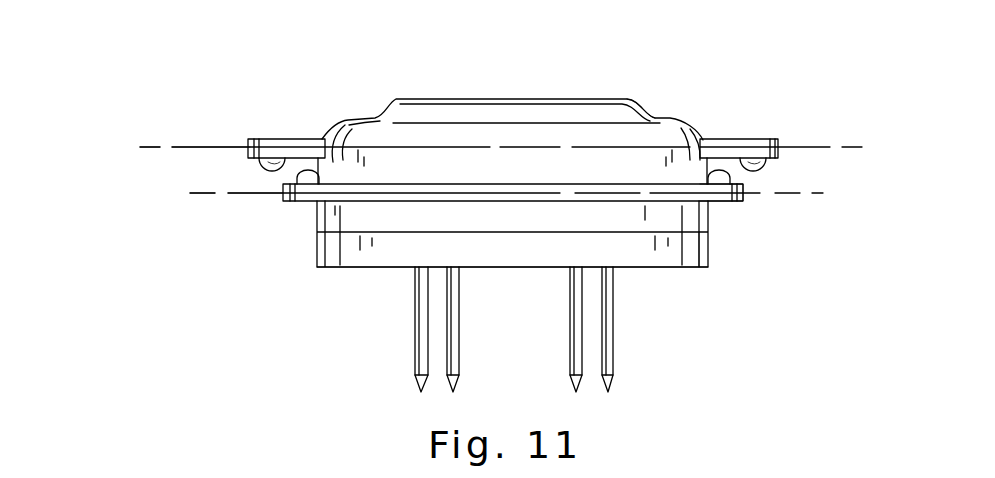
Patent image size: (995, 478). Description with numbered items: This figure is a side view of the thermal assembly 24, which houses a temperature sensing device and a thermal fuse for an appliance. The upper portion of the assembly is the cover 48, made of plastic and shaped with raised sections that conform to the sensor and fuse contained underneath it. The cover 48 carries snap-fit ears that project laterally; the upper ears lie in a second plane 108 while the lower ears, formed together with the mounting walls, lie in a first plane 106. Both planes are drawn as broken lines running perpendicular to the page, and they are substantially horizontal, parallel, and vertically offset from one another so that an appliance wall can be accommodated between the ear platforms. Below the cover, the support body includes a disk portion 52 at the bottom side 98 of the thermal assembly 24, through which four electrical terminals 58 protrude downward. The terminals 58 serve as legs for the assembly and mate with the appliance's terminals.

The thermal assembly 24 is at (403, 81).
The cover 48 is at (662, 137).
The second plane 108 is at (193, 147).
The first plane 106 is at (238, 193).
The bottom side 98 is at (370, 270).
The disk portion 52 is at (675, 252).
The electrical terminals 58 is at (573, 338).